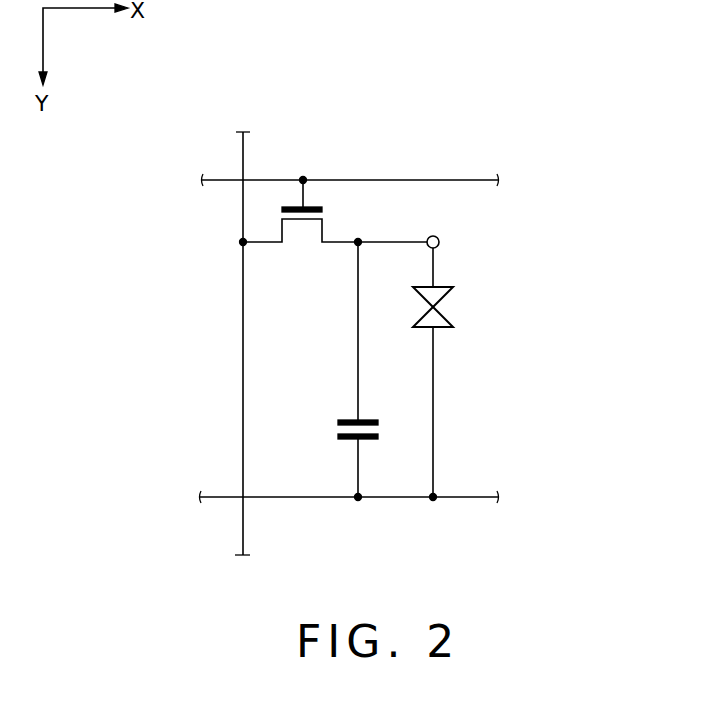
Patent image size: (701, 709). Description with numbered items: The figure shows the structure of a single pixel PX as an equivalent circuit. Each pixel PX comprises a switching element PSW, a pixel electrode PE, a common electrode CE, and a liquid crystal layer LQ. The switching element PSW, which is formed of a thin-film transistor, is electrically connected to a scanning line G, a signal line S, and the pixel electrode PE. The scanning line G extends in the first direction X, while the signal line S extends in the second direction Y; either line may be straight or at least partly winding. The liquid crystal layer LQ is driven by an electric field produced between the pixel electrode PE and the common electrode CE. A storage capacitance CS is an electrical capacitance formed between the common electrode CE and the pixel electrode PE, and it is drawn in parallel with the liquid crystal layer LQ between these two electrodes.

The scanning line G is at (232, 179).
The signal line S is at (241, 314).
The common electrode CE is at (468, 499).
The switching element PSW is at (339, 228).
The pixel electrode PE is at (440, 242).
The liquid crystal layer LQ is at (462, 311).
The storage capacitance CS is at (330, 430).
The pixel PX is at (558, 218).